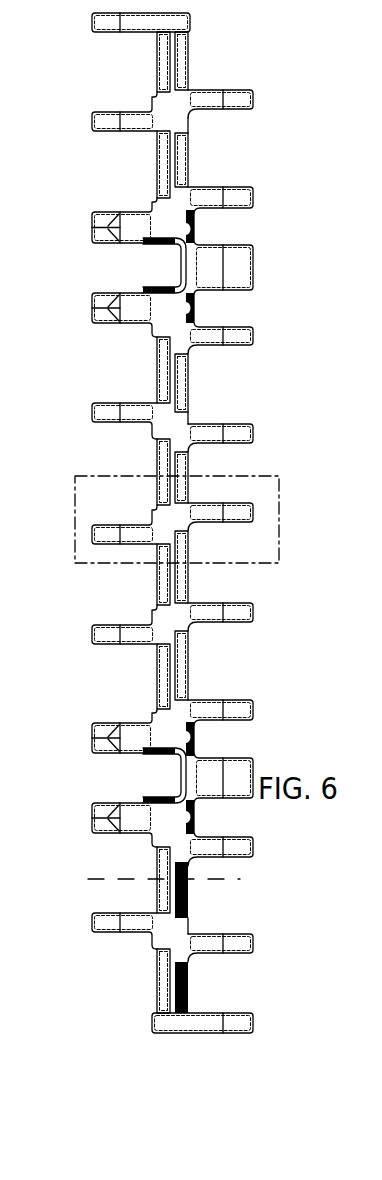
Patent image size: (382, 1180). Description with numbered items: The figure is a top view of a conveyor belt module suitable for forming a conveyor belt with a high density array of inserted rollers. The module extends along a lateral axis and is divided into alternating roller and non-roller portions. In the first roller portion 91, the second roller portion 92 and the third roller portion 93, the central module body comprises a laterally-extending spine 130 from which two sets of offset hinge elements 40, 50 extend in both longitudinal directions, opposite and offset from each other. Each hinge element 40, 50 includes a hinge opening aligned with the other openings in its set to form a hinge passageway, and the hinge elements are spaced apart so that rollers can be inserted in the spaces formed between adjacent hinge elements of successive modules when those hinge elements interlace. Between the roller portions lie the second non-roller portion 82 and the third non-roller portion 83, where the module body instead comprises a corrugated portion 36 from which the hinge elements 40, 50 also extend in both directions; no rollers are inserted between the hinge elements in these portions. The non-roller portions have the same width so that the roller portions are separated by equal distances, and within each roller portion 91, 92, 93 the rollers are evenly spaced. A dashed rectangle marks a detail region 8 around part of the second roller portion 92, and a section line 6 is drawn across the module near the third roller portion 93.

The first roller portion 91 is at (75, 147).
The laterally-extending spine 130 is at (172, 62).
The second non-roller portion 82 is at (267, 333).
The corrugated portion 36 is at (193, 262).
The second roller portion 92 is at (87, 653).
The hinge element 50 is at (254, 431).
The detail region 8 is at (280, 490).
The third non-roller portion 83 is at (88, 663).
The third roller portion 93 is at (267, 1017).
The hinge element 40 is at (88, 926).
The section line 6- 6 is at (161, 880).